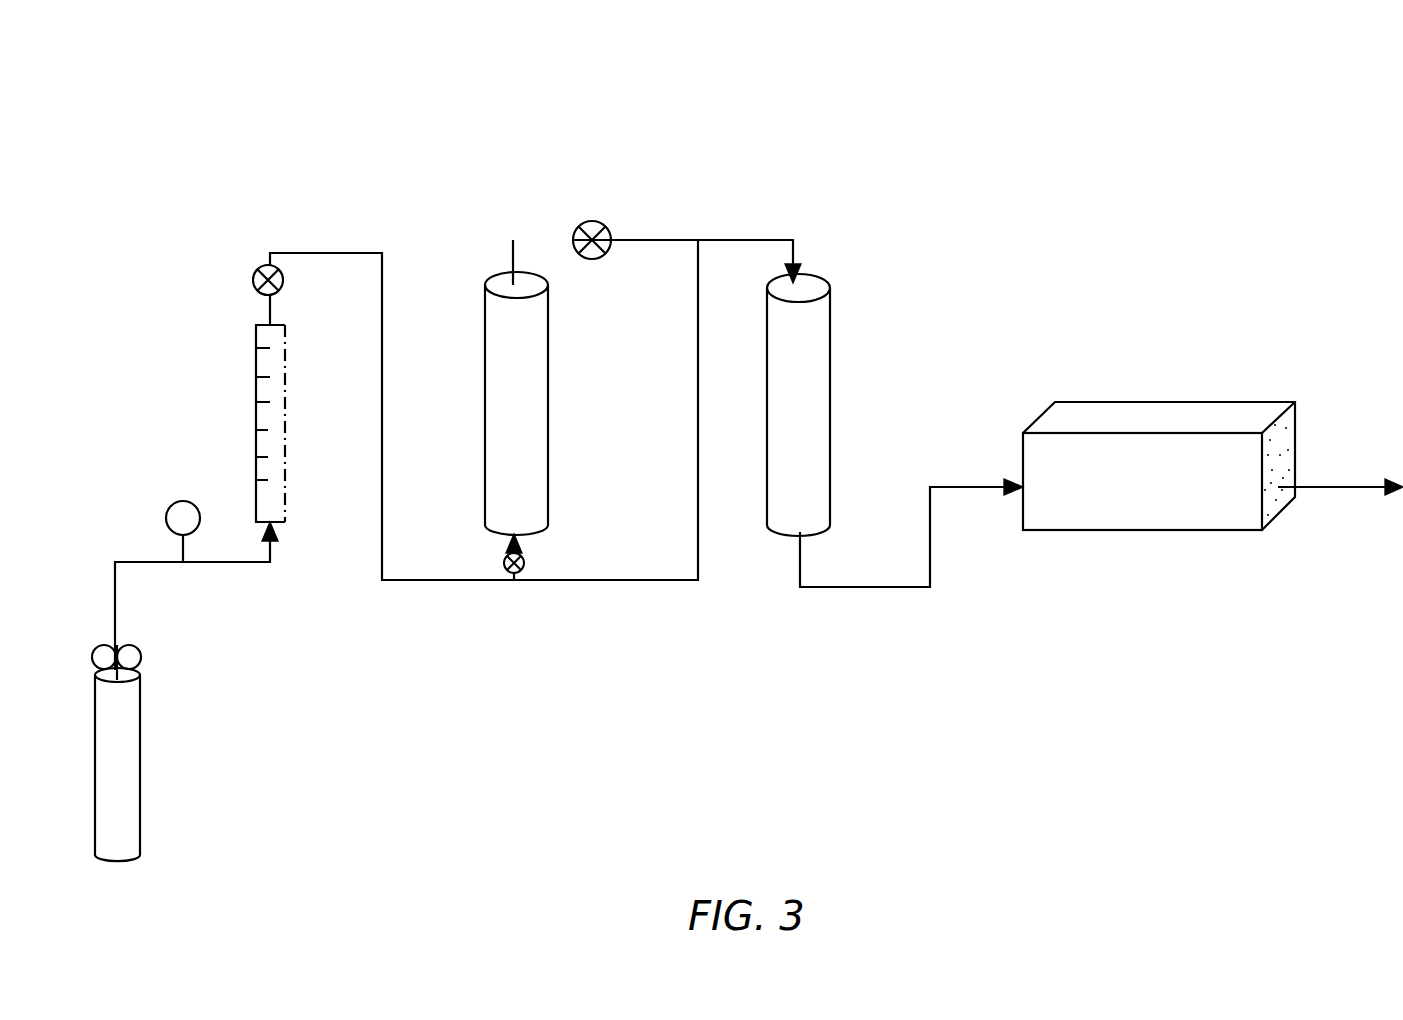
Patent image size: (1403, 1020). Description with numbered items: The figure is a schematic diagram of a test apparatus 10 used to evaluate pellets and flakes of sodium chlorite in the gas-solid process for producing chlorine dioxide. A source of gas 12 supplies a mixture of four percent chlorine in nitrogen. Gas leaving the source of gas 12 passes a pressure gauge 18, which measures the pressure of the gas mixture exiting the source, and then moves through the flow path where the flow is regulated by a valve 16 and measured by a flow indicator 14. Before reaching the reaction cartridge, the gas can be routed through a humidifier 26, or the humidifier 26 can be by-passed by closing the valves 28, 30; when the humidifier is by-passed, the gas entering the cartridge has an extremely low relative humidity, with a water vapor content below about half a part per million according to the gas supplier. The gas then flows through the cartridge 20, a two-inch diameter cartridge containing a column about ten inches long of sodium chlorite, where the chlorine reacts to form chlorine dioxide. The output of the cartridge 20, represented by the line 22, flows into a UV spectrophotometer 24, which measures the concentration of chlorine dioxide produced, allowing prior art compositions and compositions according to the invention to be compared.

The apparatus 10 is at (740, 183).
The source of gas 12 is at (140, 703).
The flow indicator 14 is at (290, 402).
The valve 16 is at (561, 403).
The pressure gauge 18 is at (200, 524).
The cartridge 20 is at (838, 394).
The line 22 is at (871, 592).
The UV spectrophotometer 24 is at (1158, 402).
The humidifier 26 is at (288, 285).
The valve 28 is at (525, 560).
The valve 30 is at (614, 224).